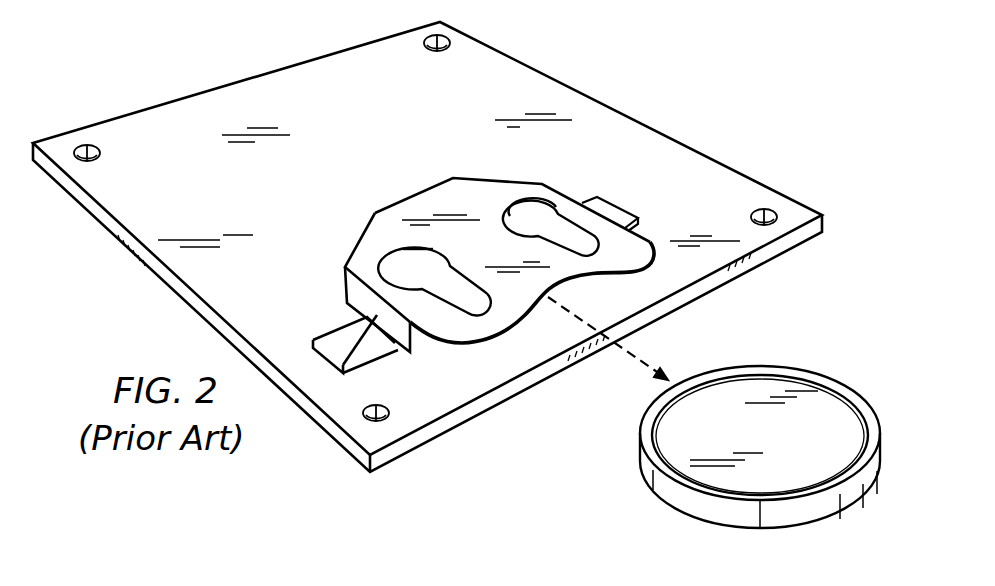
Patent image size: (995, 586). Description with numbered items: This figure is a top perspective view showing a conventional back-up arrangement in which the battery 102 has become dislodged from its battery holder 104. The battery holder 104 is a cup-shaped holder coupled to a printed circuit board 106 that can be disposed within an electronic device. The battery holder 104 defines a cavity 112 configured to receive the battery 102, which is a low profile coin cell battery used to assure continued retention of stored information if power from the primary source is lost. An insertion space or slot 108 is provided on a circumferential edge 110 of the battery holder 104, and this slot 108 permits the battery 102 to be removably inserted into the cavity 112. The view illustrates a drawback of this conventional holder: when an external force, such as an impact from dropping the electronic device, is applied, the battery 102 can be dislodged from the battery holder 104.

The battery 102 is at (648, 480).
The battery holder 104 is at (376, 215).
The printed circuit board 106 is at (616, 118).
The slot 108 is at (615, 284).
The edge 110 is at (652, 228).
The cavity 112 is at (463, 300).